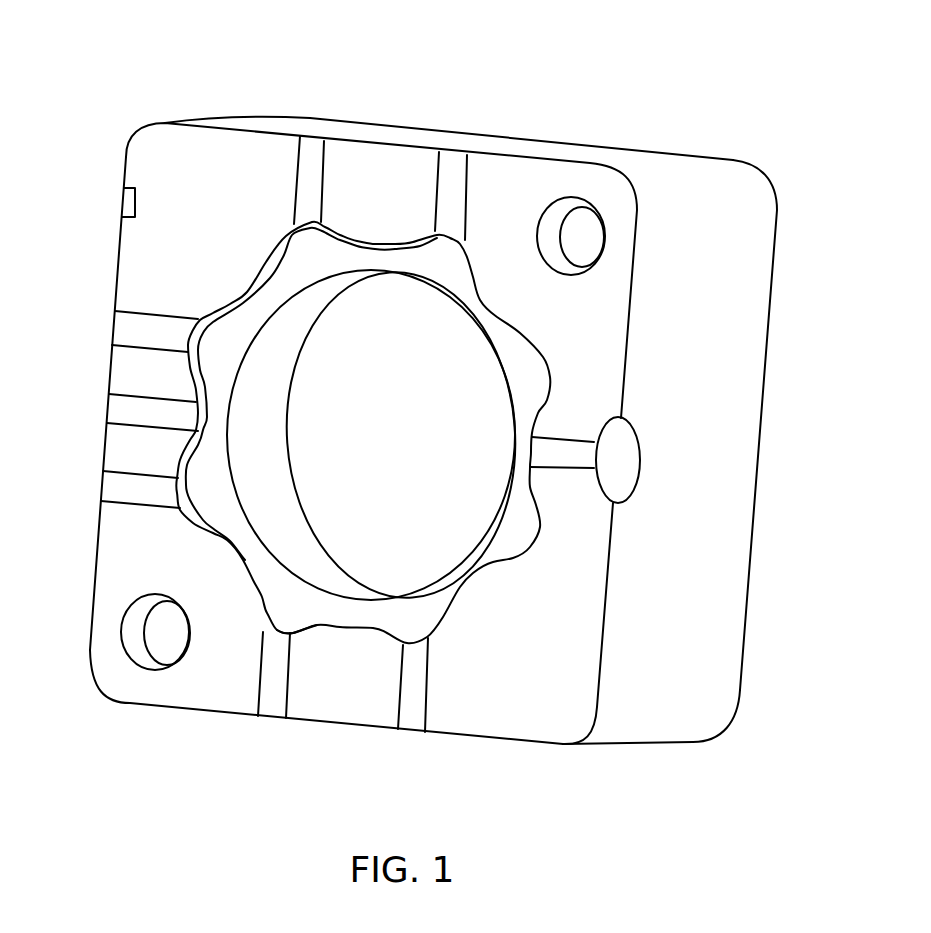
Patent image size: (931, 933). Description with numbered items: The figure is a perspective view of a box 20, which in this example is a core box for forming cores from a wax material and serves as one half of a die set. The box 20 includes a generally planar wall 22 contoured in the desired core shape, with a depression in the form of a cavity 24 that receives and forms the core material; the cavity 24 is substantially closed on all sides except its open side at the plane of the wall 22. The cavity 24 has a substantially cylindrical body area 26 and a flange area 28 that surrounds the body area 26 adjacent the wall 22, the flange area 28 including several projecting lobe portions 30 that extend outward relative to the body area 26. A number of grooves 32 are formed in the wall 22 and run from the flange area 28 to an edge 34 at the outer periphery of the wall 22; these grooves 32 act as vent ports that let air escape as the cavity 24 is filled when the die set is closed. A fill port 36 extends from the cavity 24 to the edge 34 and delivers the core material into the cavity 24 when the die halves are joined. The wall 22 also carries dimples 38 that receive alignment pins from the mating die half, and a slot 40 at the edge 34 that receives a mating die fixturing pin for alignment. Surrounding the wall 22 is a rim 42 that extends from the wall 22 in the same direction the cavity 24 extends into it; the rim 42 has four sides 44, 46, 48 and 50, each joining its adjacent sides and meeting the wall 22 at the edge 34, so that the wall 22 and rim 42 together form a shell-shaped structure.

The box 20 is at (509, 90).
The wall 22 is at (160, 140).
The cavity 24 is at (463, 354).
The body area 26 is at (458, 537).
The flange area 28 is at (307, 616).
The lobe portions 30 is at (296, 230).
The grooves 32 is at (118, 407).
The edge 34 is at (120, 268).
The fill port 36 is at (569, 462).
The dimples 38 is at (598, 254).
The slot 40 is at (128, 205).
The rim 42 is at (762, 236).
The side 44 is at (371, 137).
The side 46 is at (112, 356).
The side 48 is at (376, 733).
The side 50 is at (686, 452).